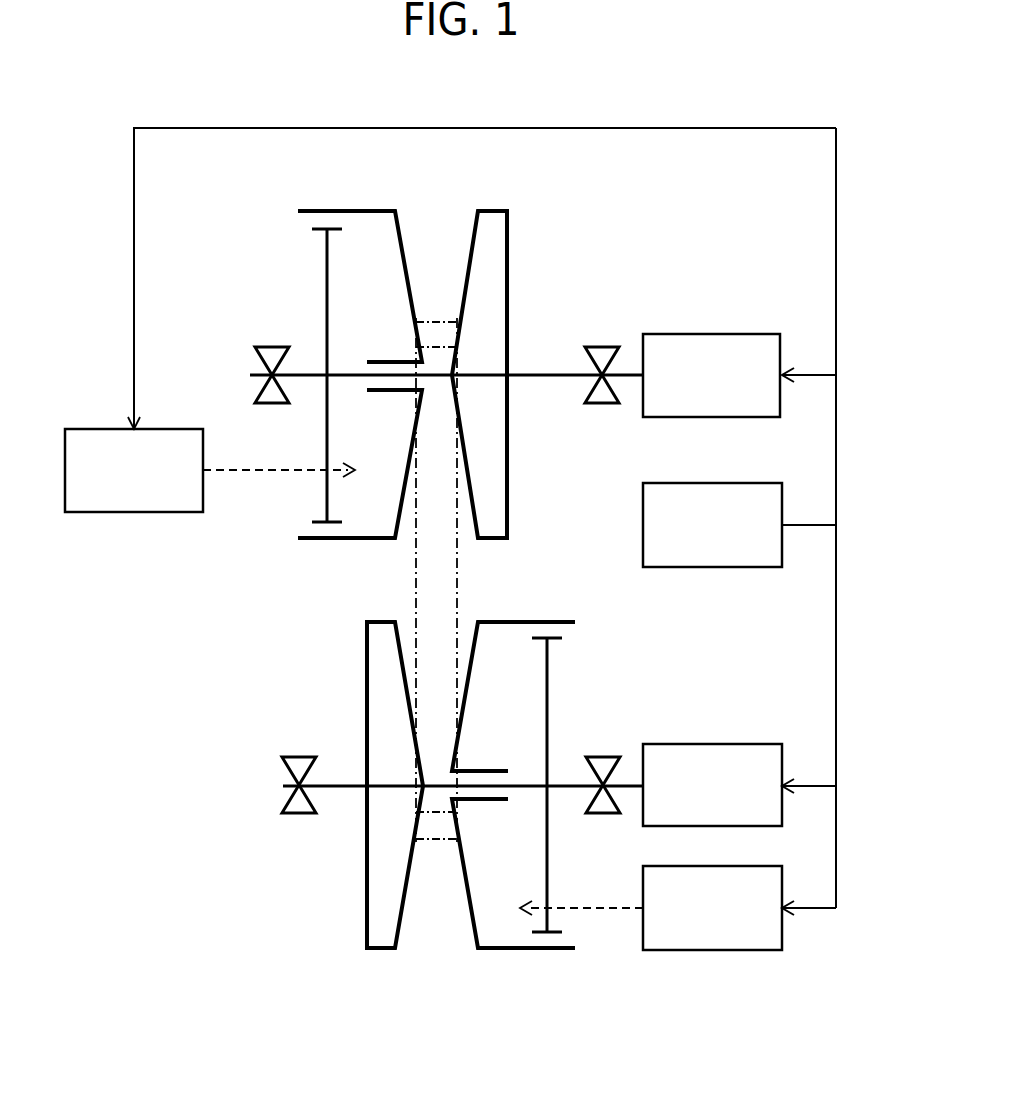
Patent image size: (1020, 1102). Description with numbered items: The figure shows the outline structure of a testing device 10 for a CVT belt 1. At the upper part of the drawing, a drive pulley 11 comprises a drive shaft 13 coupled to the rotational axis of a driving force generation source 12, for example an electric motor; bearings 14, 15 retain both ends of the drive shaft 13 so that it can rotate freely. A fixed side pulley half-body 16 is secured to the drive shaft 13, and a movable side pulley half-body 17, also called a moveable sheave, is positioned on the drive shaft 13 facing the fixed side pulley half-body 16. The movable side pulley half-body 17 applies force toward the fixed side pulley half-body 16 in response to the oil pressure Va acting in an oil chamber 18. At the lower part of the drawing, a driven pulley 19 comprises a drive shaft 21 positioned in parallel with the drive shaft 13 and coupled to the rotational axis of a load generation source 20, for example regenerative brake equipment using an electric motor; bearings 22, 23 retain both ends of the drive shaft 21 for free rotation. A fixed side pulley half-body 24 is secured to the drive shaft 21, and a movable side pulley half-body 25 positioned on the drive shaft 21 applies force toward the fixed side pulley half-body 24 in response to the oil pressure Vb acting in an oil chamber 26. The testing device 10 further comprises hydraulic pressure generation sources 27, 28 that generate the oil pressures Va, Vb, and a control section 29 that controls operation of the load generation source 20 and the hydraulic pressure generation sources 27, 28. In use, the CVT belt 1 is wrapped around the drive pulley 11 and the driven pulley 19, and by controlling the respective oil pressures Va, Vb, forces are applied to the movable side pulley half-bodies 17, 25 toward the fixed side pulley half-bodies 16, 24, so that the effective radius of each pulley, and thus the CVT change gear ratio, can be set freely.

The CVT belt 1 is at (408, 577).
The testing device 10 is at (404, 593).
The drive pulley 11 is at (450, 347).
The driving force generation source 12 is at (712, 334).
The drive shaft 13 is at (532, 372).
The bearing 14 is at (602, 347).
The bearing 15 is at (280, 346).
The fixed side pulley half-body 16 is at (507, 258).
The movable side pulley half-body 17 is at (404, 247).
The oil chamber 18 is at (345, 375).
The driven pulley 19 is at (437, 826).
The load generation source 20 is at (712, 744).
The drive shaft 21 is at (337, 786).
The bearing 22 is at (603, 757).
The bearing 23 is at (299, 757).
The fixed side pulley half-body 24 is at (367, 870).
The movable side pulley half-body 25 is at (475, 930).
The oil chamber 26 is at (527, 785).
The hydraulic pressure generation source 27 is at (135, 512).
The hydraulic pressure generation source 28 is at (712, 950).
The control section 29 is at (712, 483).
The oil pressure Va is at (275, 471).
The oil pressure Vb is at (608, 909).